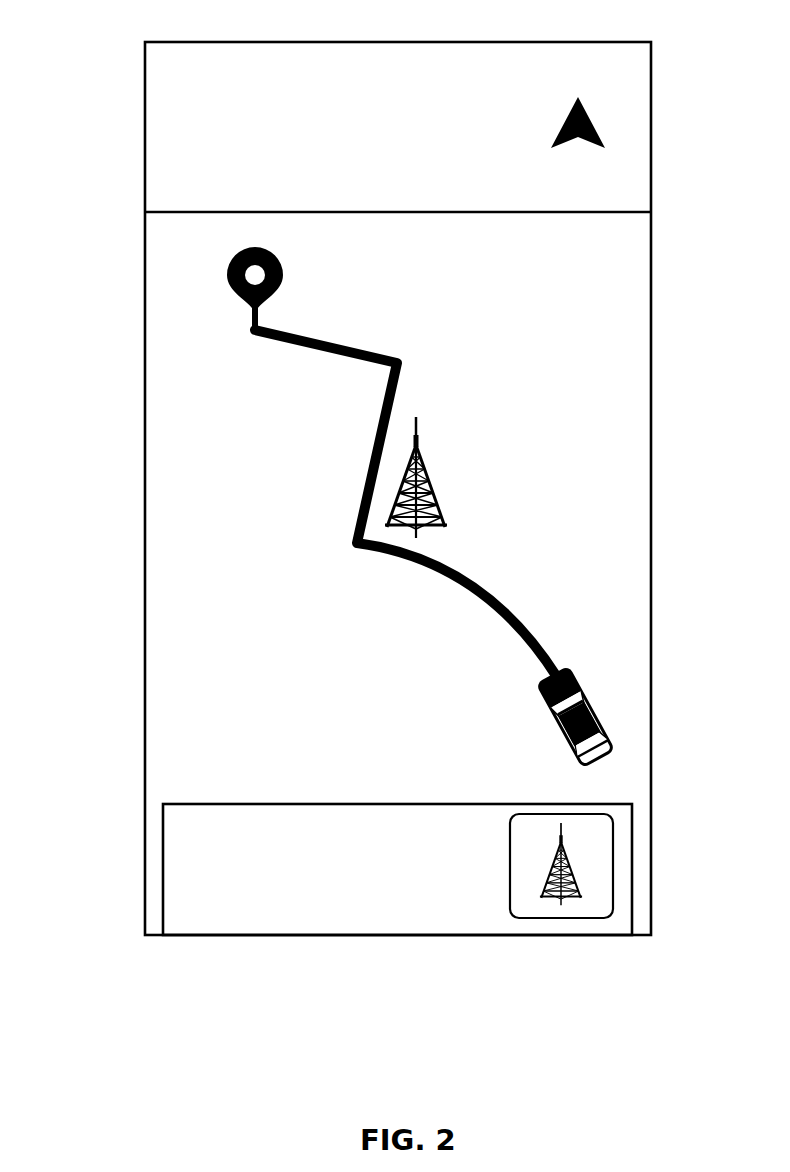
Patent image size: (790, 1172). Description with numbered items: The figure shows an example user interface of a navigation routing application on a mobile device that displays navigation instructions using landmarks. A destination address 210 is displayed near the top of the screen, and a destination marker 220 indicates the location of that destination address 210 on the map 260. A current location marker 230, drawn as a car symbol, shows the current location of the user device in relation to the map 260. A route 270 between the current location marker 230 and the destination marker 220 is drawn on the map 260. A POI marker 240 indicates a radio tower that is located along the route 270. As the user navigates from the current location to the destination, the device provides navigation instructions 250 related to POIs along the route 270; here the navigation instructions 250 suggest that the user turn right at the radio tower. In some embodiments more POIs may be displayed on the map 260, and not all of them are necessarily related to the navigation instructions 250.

The destination address 210 is at (201, 70).
The destination marker 220 is at (217, 278).
The current location marker 230 is at (599, 687).
The POI marker 240 is at (447, 461).
The navigation instructions 250 is at (160, 840).
The map 260 is at (144, 488).
The route 270 is at (389, 341).